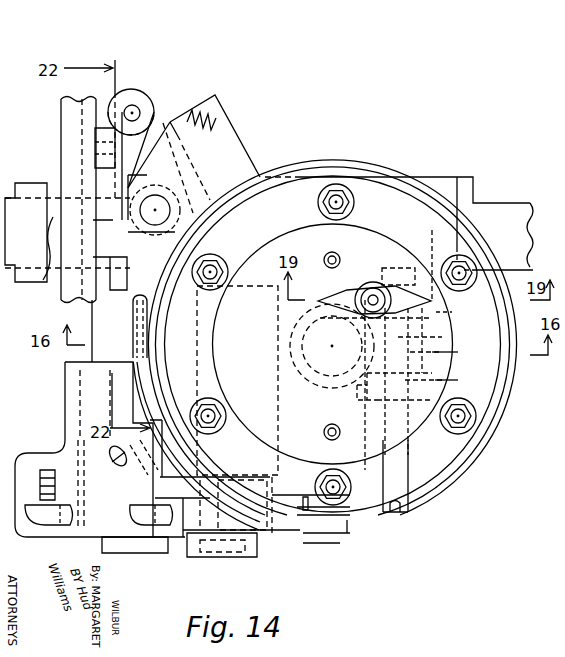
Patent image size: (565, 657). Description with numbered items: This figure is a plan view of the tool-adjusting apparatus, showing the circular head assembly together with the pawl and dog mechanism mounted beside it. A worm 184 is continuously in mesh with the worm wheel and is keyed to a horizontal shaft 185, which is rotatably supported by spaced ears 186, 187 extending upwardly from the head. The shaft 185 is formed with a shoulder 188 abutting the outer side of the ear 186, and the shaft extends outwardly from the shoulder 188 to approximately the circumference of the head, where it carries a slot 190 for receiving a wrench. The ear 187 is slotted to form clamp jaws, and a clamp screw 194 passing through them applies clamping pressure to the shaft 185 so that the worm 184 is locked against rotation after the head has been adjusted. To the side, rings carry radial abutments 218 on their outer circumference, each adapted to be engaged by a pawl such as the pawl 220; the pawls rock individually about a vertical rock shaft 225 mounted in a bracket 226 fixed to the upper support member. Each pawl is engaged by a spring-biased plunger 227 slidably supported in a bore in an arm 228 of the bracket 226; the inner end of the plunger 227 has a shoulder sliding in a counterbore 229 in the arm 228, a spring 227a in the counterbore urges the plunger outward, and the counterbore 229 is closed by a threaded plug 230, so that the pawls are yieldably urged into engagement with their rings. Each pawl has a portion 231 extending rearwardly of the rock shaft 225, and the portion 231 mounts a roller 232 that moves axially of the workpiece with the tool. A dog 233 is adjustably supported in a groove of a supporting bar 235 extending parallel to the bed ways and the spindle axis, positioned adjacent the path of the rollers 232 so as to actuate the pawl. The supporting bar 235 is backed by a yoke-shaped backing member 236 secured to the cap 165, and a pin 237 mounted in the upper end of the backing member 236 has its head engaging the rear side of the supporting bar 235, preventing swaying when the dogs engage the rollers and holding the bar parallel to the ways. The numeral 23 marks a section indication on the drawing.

The cap 165 is at (564, 384).
The worm 184 is at (442, 330).
The horizontal shaft 185 is at (461, 352).
The ear 186 is at (463, 380).
The ear 187 is at (461, 310).
The shoulder 188 is at (410, 436).
The slot 190 is at (398, 506).
The clamp screw 194 is at (355, 292).
The radial abutment 218 is at (152, 354).
The pawl 220 is at (140, 356).
The vertical rock shaft 225 is at (166, 212).
The bracket 226 is at (226, 160).
The spring-biased plunger 227 is at (172, 120).
The spring 227a is at (200, 142).
The arm 228 is at (215, 96).
The counterbore 229 is at (205, 88).
The threaded plug 230 is at (177, 130).
The portion 231 is at (153, 100).
The roller 232 is at (113, 90).
The dog 233 is at (94, 145).
The supporting bar 235 is at (60, 112).
The backing member 236 is at (38, 170).
The pin 237 is at (44, 282).
The mounting block 23 is at (414, 223).